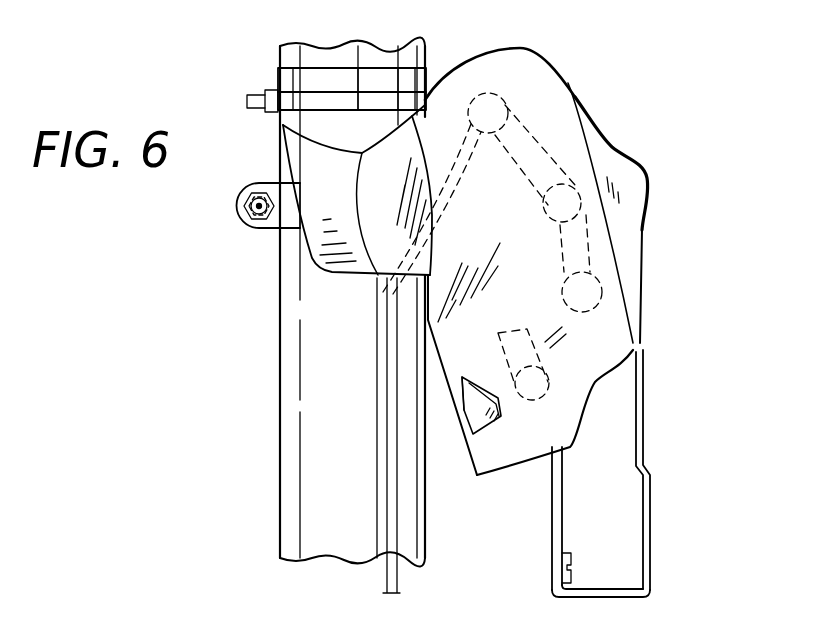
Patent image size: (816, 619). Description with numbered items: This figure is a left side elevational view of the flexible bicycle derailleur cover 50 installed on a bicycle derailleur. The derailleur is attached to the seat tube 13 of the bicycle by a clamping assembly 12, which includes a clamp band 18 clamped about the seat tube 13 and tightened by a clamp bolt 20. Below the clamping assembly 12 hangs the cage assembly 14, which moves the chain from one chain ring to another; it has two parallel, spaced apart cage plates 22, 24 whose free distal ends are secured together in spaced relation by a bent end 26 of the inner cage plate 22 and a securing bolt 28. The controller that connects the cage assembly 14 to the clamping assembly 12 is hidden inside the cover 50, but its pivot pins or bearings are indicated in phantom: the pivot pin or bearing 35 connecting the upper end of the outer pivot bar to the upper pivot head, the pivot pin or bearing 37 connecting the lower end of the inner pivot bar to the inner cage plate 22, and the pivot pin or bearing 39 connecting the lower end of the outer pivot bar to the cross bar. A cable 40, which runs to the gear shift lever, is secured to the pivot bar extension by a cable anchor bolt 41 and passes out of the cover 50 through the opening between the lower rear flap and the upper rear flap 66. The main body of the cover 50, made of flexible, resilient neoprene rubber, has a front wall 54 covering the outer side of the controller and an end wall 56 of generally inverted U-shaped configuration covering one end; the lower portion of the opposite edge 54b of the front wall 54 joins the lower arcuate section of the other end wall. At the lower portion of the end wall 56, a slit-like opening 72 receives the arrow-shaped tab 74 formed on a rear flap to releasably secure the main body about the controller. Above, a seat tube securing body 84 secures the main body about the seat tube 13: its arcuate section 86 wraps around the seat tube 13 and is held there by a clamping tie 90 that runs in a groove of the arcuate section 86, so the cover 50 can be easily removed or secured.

The clamping assembly 12 is at (230, 242).
The seat tube 13 is at (280, 526).
The cage assembly 14 is at (616, 473).
The clamp band 18 is at (263, 233).
The clamp bolt 20 is at (243, 206).
The cage plate 22 is at (563, 515).
The cage plate 24 is at (652, 510).
The bent end 26 is at (607, 587).
The securing bolt 28 is at (562, 568).
The pivot pin or bearing 35 is at (565, 197).
The pivot pin or bearing 37 is at (528, 395).
The pivot pin or bearing 39 is at (587, 292).
The cable 40 is at (387, 578).
The cable anchor bolt 41 is at (487, 107).
The cover 50 is at (562, 258).
The front wall 54 is at (628, 217).
The opposite edge of front wall 54b is at (643, 247).
The end wall 56 is at (483, 67).
The upper rear flap 66 is at (387, 253).
The slit-like opening 72 is at (464, 412).
The tab 74 is at (466, 378).
The seat tube securing body 84 is at (262, 74).
The arcuate section 86 is at (373, 67).
The clamping tie 90 is at (312, 98).